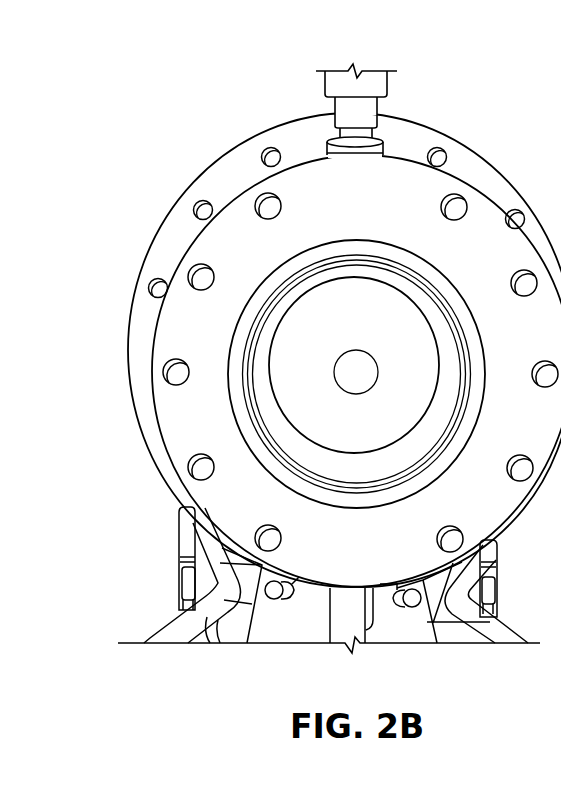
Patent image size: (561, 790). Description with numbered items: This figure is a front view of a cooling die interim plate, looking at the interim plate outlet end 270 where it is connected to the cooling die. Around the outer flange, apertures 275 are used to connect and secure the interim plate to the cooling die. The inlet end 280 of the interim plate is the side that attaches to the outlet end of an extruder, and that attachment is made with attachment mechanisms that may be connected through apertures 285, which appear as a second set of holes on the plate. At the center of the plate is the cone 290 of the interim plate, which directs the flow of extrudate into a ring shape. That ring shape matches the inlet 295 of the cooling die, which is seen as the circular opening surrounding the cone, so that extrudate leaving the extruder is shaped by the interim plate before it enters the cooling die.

The apertures 275 is at (262, 156).
The apertures 285 is at (262, 192).
The inlet 295 is at (292, 325).
The interim plate outlet end 270 is at (267, 333).
The cone 290 is at (353, 373).
The inlet end 280 is at (316, 509).